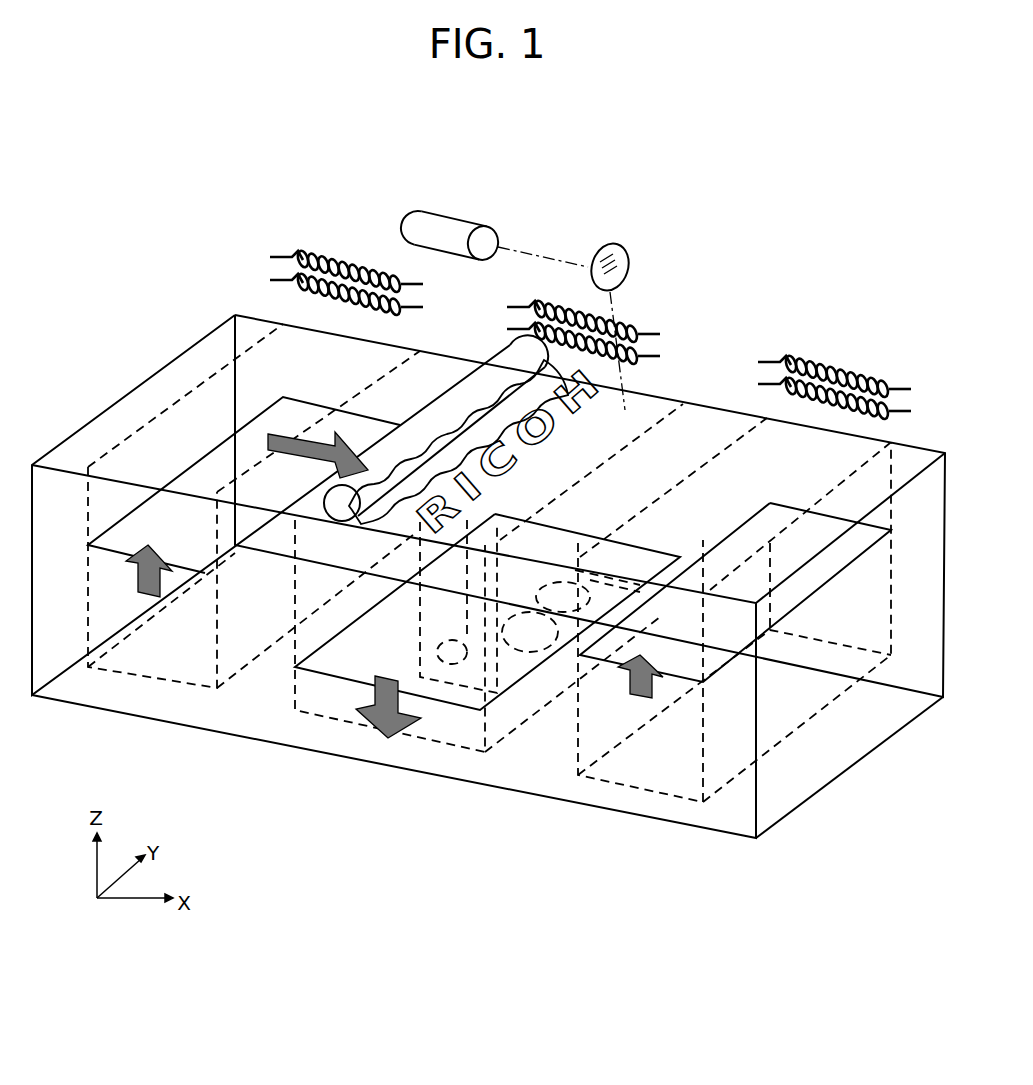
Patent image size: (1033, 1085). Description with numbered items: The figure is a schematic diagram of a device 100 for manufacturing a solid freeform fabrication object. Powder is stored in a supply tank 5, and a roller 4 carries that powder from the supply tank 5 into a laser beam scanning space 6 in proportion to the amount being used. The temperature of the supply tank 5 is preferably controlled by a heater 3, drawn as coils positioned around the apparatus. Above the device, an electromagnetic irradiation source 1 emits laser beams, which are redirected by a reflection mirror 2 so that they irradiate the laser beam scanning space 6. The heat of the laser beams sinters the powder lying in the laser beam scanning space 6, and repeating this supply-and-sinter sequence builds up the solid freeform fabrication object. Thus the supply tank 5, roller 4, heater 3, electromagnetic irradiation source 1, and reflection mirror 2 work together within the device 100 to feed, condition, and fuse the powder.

The device for manufacturing a solid freeform fabrication object 100 is at (886, 249).
The electromagnetic irradiation source 1 is at (438, 222).
The reflection mirror 2 is at (614, 250).
The heater 3 is at (282, 257).
The roller 4 is at (437, 413).
The supply tank 5 is at (237, 680).
The laser beam scanning space 6 is at (328, 722).